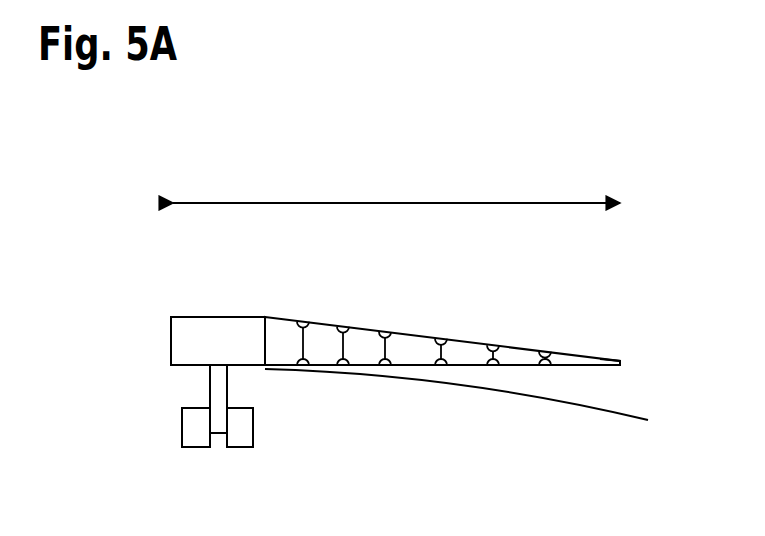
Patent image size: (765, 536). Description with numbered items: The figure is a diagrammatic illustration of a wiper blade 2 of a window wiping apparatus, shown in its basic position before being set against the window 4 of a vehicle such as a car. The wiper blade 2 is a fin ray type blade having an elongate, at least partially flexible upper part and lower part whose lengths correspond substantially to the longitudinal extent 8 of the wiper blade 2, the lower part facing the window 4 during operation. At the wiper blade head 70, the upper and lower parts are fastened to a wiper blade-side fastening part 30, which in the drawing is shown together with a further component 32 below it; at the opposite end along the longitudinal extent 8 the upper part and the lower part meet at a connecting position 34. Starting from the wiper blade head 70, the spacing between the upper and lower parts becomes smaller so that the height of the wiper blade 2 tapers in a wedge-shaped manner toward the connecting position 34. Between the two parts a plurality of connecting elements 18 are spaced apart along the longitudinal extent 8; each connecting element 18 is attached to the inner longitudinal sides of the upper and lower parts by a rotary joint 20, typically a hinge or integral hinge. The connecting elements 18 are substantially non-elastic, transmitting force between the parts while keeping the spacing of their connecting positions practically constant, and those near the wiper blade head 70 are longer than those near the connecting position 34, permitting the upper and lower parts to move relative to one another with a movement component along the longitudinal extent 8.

The wiper blade 2 is at (478, 275).
The window 4 is at (598, 411).
The longitudinal extent 8 is at (378, 203).
The connecting elements 18 is at (310, 343).
The rotary joint 20 is at (303, 322).
The wiper blade-side fastening part 30 is at (183, 343).
The connector units 32 is at (195, 430).
The connecting position 34 is at (620, 360).
The wiper blade head 70 is at (175, 326).